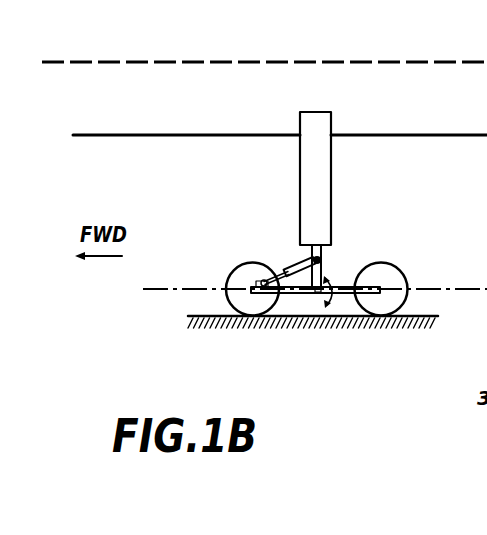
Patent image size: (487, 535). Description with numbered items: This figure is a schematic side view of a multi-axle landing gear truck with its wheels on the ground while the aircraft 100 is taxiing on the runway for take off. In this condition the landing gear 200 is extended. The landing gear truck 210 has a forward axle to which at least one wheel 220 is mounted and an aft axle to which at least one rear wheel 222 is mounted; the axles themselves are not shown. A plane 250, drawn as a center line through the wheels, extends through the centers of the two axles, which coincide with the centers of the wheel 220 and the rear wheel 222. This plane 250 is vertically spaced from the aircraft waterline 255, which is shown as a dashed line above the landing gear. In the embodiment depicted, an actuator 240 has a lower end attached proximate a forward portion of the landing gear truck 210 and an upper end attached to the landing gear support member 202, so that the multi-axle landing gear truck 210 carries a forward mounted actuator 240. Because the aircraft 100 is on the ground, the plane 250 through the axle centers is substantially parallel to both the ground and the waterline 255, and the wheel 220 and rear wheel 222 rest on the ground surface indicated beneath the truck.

The aircraft waterline 255 is at (185, 60).
The aircraft 100 is at (155, 150).
The landing gear 200 is at (411, 184).
The landing gear support member 202 is at (330, 257).
The actuator 240 is at (289, 263).
The wheel 220 is at (242, 270).
The rear wheel 222 is at (395, 272).
The plane 250 is at (160, 290).
The landing gear truck 210 is at (438, 345).